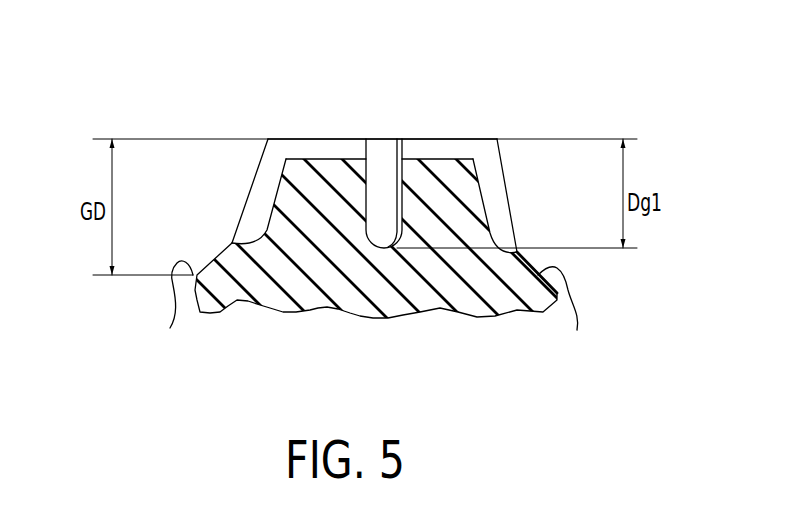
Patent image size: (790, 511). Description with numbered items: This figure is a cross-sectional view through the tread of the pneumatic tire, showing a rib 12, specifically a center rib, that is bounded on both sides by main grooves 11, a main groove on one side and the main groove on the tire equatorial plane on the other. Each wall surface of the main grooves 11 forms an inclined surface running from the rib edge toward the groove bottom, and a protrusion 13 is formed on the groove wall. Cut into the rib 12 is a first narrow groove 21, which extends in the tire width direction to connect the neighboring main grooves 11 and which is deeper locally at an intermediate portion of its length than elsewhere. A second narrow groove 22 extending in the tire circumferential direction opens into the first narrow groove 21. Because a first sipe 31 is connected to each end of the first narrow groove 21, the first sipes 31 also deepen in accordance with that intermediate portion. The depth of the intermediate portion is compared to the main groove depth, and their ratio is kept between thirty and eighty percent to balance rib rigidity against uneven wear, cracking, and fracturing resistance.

The main groove 11 is at (347, 253).
The rib 12 is at (335, 138).
The protrusion 13 is at (257, 160).
The first narrow groove 21 is at (432, 158).
The second narrow groove 22 is at (394, 177).
The first sipe 31 is at (253, 221).